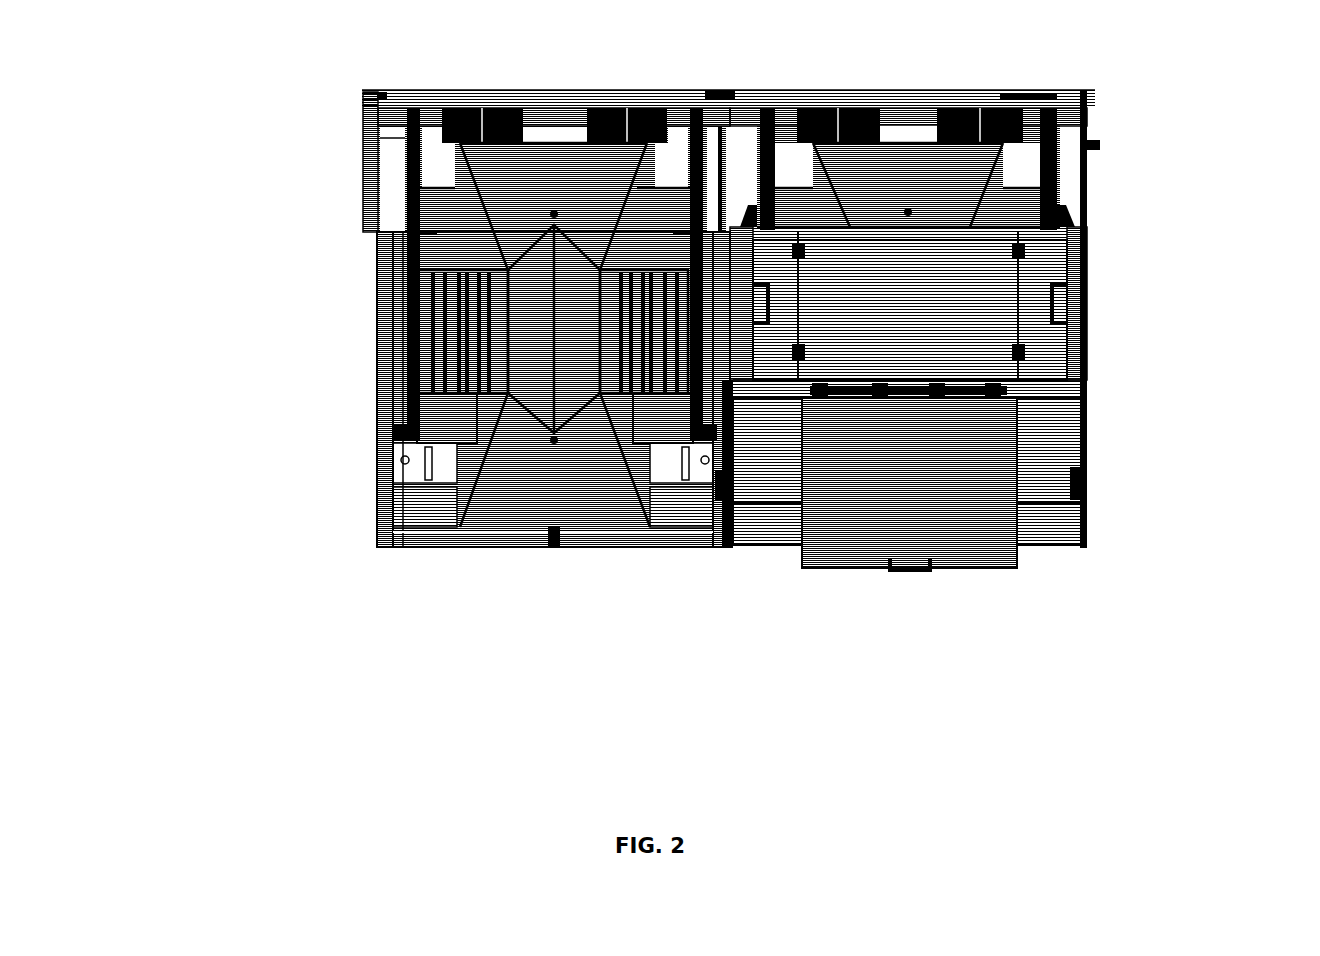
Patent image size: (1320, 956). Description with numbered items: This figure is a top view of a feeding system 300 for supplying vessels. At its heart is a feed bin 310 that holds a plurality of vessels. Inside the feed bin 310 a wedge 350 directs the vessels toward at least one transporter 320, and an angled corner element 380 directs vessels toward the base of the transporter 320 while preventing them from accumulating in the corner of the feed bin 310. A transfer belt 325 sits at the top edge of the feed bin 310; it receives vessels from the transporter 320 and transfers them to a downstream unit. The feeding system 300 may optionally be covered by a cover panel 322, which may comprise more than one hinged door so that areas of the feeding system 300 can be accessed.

The feeding system 300 is at (197, 58).
The cover panel 322 is at (957, 325).
The transfer belt 325 is at (392, 390).
The transporter 320 is at (462, 368).
The wedge 350 is at (537, 345).
The feed bin 310 is at (605, 485).
The angled corner element 380 is at (640, 468).